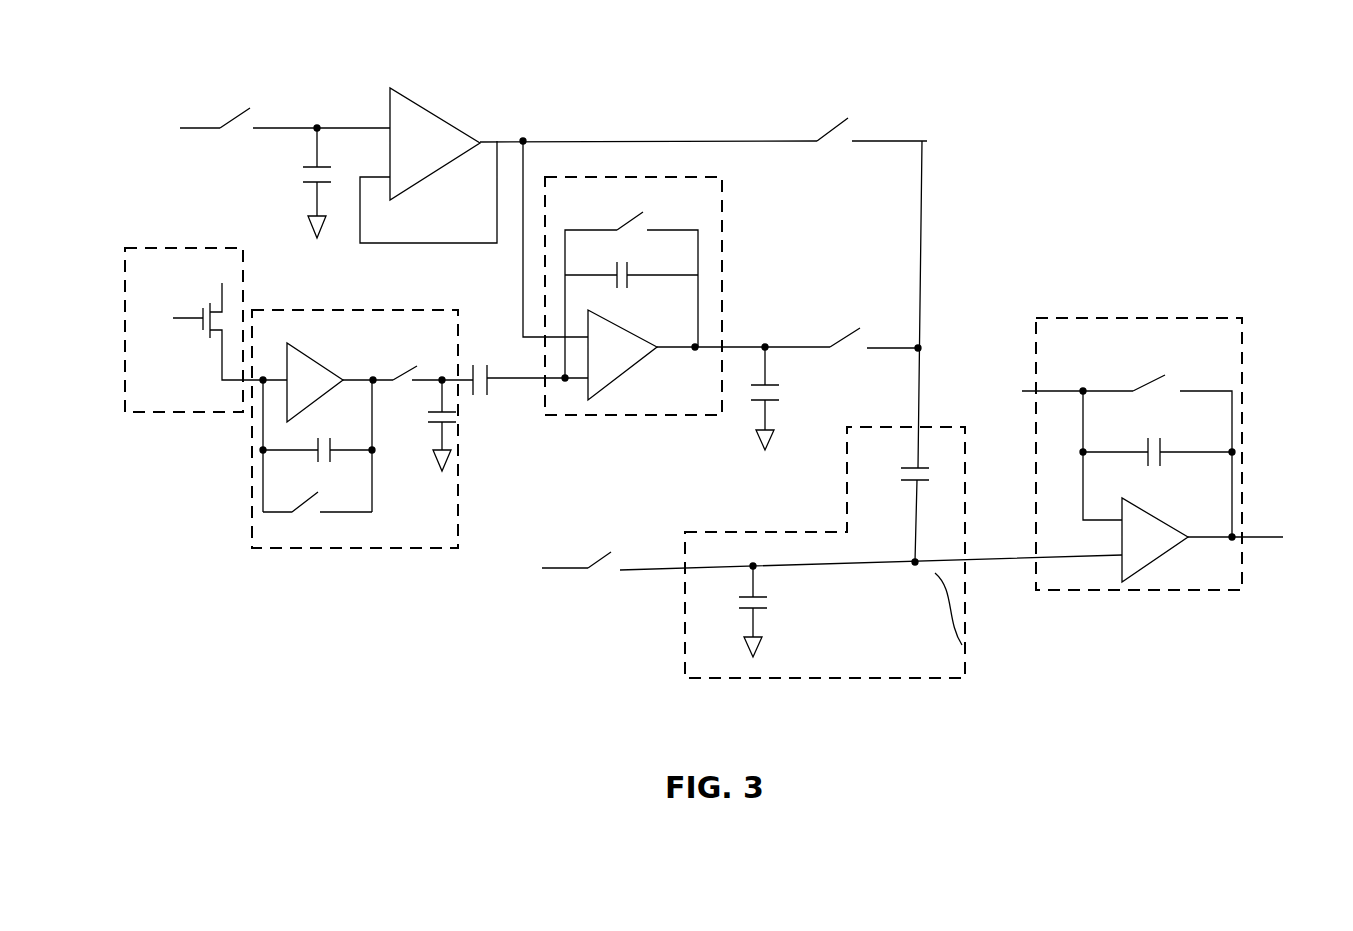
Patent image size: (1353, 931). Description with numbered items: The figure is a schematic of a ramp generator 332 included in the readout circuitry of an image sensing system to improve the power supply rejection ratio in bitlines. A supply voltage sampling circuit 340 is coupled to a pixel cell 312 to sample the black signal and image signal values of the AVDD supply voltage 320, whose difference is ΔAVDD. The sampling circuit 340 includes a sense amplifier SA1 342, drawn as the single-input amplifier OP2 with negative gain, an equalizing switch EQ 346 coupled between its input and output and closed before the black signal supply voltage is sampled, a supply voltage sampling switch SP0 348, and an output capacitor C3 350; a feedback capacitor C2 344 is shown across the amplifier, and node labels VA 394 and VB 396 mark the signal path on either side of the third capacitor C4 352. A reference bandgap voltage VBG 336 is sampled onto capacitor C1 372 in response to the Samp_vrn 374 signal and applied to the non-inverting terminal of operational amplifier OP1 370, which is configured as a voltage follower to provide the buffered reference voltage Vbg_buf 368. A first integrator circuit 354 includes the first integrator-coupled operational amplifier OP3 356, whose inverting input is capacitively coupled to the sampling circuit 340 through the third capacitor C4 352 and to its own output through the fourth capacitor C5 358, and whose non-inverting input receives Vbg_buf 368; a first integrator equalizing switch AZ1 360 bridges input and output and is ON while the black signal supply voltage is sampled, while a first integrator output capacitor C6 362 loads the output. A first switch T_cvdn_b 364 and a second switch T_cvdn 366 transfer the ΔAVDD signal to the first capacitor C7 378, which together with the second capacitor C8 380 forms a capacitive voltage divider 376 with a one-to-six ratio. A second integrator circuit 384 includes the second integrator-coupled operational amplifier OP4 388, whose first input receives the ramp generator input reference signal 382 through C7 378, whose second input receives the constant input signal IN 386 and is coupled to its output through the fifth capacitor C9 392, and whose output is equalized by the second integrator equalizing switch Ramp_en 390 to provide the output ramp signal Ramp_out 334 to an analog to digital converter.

The ramp generator 332 is at (1170, 90).
The pixel cell 312 is at (173, 248).
The AVDD supply voltage 320 is at (192, 276).
The reference bandgap voltage V_BG 336 is at (165, 118).
The Samp_vrn signal 374 is at (250, 92).
The capacitor C1 372 is at (279, 178).
The operational amplifier OP1 370 is at (413, 97).
The buffered reference voltage Vbg_buf 368 is at (541, 99).
The first switch T_cvdn_b 364 is at (858, 96).
The second switch T_cvdn 366 is at (846, 297).
The first integrator circuit 354 is at (658, 417).
The first integrator-coupled operational amplifier OP3 356 is at (629, 338).
The fourth capacitor C5 358 is at (649, 275).
The first integrator equalizing switch AZ1 360 is at (649, 222).
The first integrator output capacitor C6 362 is at (786, 412).
The supply voltage sampling circuit 340 is at (405, 548).
The sense amplifier SA1 342 is at (296, 360).
The capacitor C2 344 is at (345, 460).
The equalizing switch EQ 346 is at (295, 525).
The supply voltage sampling switch SP0 348 is at (390, 357).
The output capacitor C3 350 is at (458, 438).
The third capacitor C4 352 is at (470, 340).
The node VA 394 is at (441, 362).
The node VB 396 is at (520, 350).
The ramp generator input reference signal 382 is at (528, 590).
The capacitive voltage divider 376 is at (685, 650).
The first capacitor C7 378 is at (905, 495).
The second capacitor C8 380 is at (762, 622).
The second integrator circuit 384 is at (1036, 318).
The constant input signal IN 386 is at (995, 385).
The second integrator equalizing switch Ramp_en 390 is at (1127, 365).
The fifth capacitor C9 392 is at (1142, 440).
The second integrator-coupled operational amplifier OP4 388 is at (1163, 530).
The output ramp signal Ramp_out 334 is at (1268, 508).